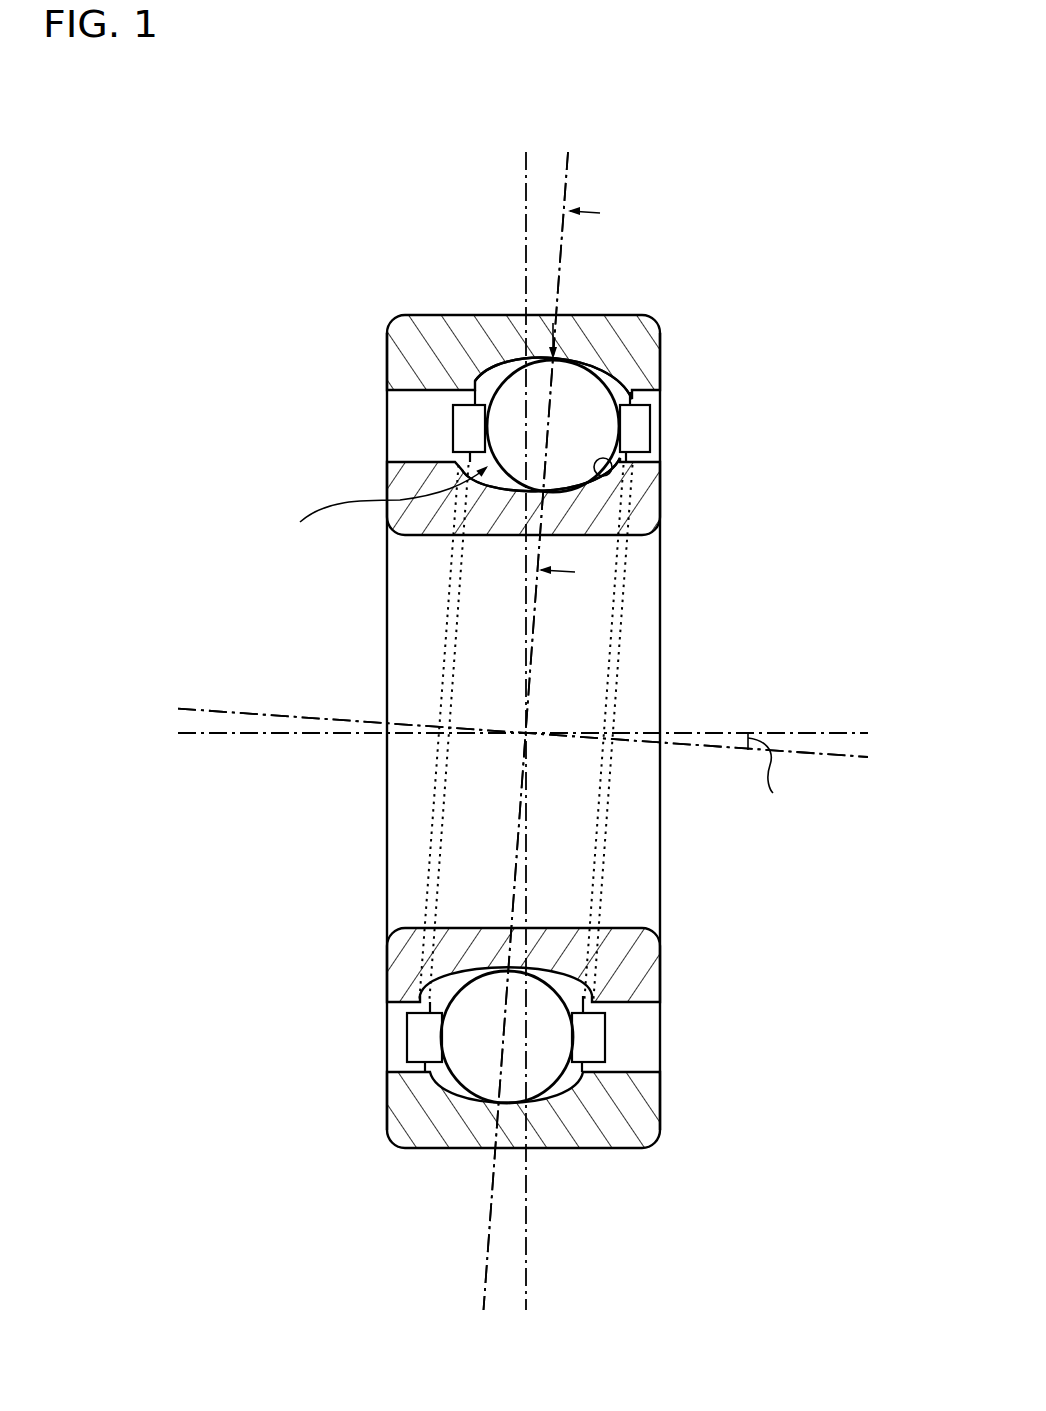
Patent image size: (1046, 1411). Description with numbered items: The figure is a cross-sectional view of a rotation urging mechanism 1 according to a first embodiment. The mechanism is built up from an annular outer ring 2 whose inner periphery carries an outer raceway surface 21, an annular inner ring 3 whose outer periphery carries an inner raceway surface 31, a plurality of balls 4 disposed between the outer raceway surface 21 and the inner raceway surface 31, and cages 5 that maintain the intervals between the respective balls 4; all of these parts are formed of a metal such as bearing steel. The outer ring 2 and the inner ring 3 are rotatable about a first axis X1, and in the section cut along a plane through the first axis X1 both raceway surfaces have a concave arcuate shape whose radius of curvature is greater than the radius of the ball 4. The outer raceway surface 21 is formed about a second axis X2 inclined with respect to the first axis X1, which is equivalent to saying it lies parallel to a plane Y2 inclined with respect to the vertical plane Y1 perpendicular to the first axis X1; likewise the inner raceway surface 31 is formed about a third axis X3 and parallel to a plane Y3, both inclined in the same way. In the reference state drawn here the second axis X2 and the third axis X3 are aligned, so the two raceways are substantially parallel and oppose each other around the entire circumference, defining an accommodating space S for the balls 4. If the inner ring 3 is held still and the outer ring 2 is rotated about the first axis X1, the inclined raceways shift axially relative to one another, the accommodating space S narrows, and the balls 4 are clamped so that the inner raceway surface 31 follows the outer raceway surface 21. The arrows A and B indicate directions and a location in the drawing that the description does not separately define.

The rotation urging mechanism 1 is at (485, 680).
The outer ring 2 is at (648, 362).
The outer raceway surface 21 is at (475, 381).
The inner ring 3 is at (648, 494).
The inner raceway surface 31 is at (630, 530).
The ball 4 is at (498, 427).
The cage 5 is at (642, 433).
The vertical plane Y1 is at (526, 188).
The plane Y2 is at (567, 187).
The plane Y3 is at (526, 731).
The first axis X1 is at (206, 733).
The second axis X2 is at (206, 710).
The third axis X3 is at (523, 733).
The axial direction A is at (582, 394).
The contact point B is at (564, 341).
The accommodating space S is at (384, 509).